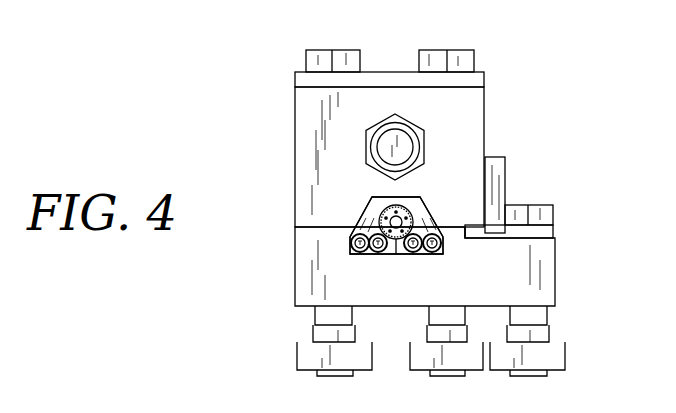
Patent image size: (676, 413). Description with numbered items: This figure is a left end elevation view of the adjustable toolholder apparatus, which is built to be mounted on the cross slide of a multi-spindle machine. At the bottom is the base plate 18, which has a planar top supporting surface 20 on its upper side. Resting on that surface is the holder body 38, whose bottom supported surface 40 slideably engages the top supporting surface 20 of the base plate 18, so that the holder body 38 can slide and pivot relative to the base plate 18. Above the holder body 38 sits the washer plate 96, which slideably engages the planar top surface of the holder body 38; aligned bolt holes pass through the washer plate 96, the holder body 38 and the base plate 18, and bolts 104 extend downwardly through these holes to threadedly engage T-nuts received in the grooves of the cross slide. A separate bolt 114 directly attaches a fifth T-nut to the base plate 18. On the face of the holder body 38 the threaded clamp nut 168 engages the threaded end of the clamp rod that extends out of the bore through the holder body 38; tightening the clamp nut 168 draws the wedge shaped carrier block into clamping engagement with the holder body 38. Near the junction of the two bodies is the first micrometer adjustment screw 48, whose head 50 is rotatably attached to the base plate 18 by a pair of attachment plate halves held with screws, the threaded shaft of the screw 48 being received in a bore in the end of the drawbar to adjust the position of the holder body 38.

The base plate 18 is at (304, 271).
The planar top supporting surface 20 is at (455, 227).
The holder body 38 is at (305, 129).
The bottom supported surface 40 is at (456, 228).
The first micrometer adjustment screw 48 is at (372, 212).
The head 50 is at (396, 225).
The washer plate 96 is at (378, 76).
The bolts 104 is at (312, 50).
The bolt 114 is at (536, 207).
The threaded clamp nut 168 is at (423, 137).